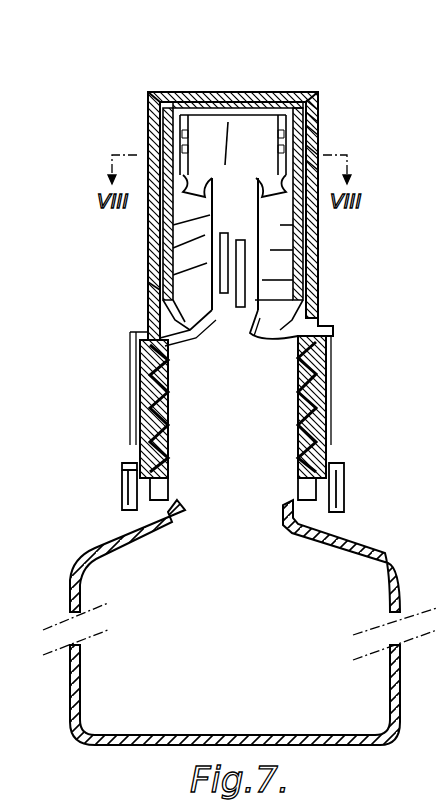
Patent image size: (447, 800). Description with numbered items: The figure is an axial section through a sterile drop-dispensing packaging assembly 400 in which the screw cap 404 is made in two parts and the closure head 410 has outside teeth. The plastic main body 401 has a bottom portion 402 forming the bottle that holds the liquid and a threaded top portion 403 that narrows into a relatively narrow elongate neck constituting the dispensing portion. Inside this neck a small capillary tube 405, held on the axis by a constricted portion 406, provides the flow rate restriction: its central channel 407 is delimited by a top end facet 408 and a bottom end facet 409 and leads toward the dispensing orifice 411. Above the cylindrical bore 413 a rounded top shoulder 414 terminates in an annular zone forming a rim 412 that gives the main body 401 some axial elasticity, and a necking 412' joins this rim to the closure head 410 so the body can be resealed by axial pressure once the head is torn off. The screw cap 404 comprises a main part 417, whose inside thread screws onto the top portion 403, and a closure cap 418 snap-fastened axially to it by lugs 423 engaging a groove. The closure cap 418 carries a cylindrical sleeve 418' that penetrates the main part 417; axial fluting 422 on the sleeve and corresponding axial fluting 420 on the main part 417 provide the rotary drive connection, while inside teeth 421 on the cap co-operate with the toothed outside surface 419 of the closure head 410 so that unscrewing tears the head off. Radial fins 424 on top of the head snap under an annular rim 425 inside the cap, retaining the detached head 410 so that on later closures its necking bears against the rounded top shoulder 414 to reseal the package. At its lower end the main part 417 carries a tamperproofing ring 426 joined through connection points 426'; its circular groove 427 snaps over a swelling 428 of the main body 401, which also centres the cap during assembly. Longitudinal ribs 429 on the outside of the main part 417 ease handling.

The packaging assembly 400 is at (96, 356).
The main body 401 is at (88, 538).
The bottom portion 402 is at (67, 713).
The top portion 403 is at (148, 338).
The screw cap 404 is at (146, 286).
The capillary tube 405 is at (256, 301).
The constricted portion 406 is at (183, 322).
The central channel 407 is at (213, 318).
The top end facet 408 is at (264, 281).
The bottom end facet 409 is at (333, 345).
The closure head 410 is at (270, 137).
The dispensing orifice 411 is at (228, 92).
The rim 412 is at (322, 260).
The necking 412' is at (215, 143).
The cylindrical bore 413 is at (207, 264).
The rounded top shoulder 414 is at (205, 236).
The main part 417 is at (136, 390).
The closure cap 418 is at (233, 178).
The cylindrical sleeve 418' is at (146, 231).
The outside surface 419 is at (290, 102).
The axial fluting 420 is at (322, 150).
The inside teeth 421 is at (280, 227).
The axial fluting 422 is at (320, 124).
The lugs 423 is at (318, 104).
The radial fins 424 is at (193, 101).
The annular rim 425 is at (158, 93).
The tamperproofing ring 426 is at (85, 479).
The connection points 426' is at (85, 447).
The circular groove 427 is at (128, 503).
The swelling 428 is at (154, 494).
The longitudinal ribs 429 is at (338, 376).